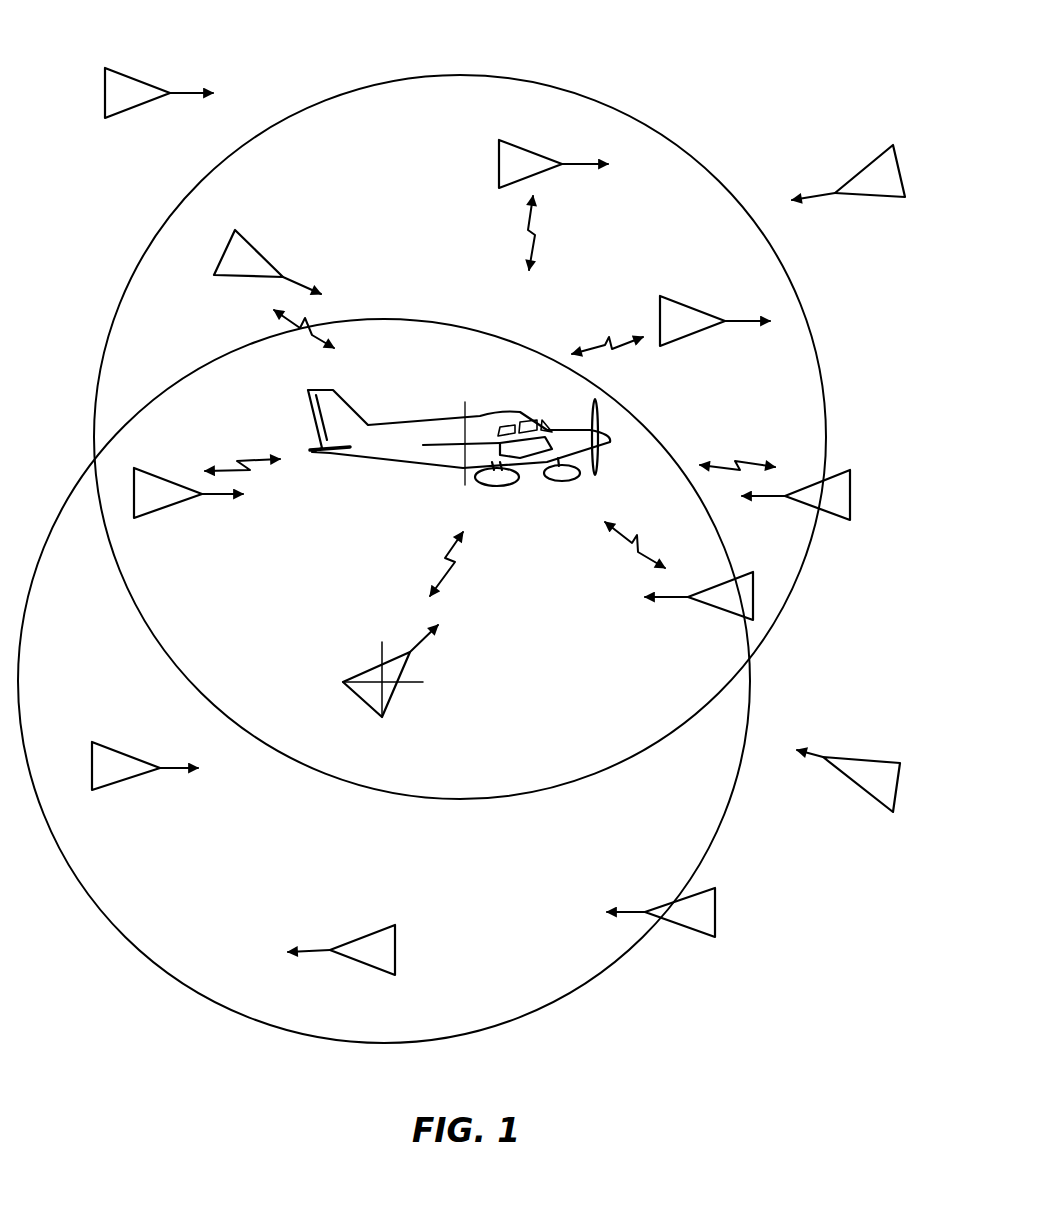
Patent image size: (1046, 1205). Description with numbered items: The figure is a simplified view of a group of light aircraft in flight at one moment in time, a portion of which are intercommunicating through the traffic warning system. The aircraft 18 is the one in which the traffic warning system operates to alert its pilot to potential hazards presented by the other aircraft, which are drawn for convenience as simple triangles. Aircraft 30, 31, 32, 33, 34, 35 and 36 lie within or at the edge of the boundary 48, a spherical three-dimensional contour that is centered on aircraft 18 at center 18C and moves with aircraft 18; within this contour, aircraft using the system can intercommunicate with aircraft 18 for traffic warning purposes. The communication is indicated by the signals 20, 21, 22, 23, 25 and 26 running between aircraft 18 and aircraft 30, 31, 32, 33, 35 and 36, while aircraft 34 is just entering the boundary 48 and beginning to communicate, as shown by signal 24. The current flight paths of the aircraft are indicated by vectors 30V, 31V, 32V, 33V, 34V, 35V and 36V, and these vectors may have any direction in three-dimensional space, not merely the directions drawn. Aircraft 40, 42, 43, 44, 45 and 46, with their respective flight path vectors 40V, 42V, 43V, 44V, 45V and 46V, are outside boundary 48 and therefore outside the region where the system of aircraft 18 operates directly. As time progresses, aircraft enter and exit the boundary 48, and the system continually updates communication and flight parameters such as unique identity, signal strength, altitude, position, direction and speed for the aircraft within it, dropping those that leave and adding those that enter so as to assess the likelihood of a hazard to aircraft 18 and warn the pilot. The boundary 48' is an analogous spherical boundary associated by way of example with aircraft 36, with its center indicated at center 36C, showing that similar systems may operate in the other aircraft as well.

The aircraft 18 is at (410, 425).
The center 18C is at (460, 445).
The signal 20 is at (243, 462).
The signal 21 is at (283, 322).
The signal 22 is at (532, 215).
The signal 23 is at (607, 338).
The signal 24 is at (742, 461).
The signal 25 is at (627, 541).
The signal 26 is at (446, 552).
The aircraft 30 is at (158, 508).
The vector 30V is at (220, 496).
The aircraft 31 is at (258, 252).
The vector 31V is at (303, 283).
The aircraft 32 is at (533, 148).
The vector 32V is at (575, 162).
The aircraft 33 is at (693, 303).
The vector 33V is at (733, 320).
The aircraft 34 is at (828, 513).
The vector 34V is at (768, 497).
The aircraft 35 is at (728, 618).
The vector 35V is at (668, 600).
The aircraft 36 is at (366, 671).
The vector 36V is at (425, 645).
The center 36C is at (392, 690).
The aircraft 40 is at (120, 785).
The vector 40V is at (175, 770).
The aircraft 42 is at (135, 78).
The vector 42V is at (190, 92).
The aircraft 43 is at (888, 150).
The vector 43V is at (826, 191).
The aircraft 44 is at (860, 805).
The vector 44V is at (833, 755).
The aircraft 45 is at (680, 935).
The vector 45V is at (640, 910).
The aircraft 46 is at (357, 926).
The vector 46V is at (325, 947).
The boundary 48 is at (435, 437).
The boundary 48' is at (377, 681).